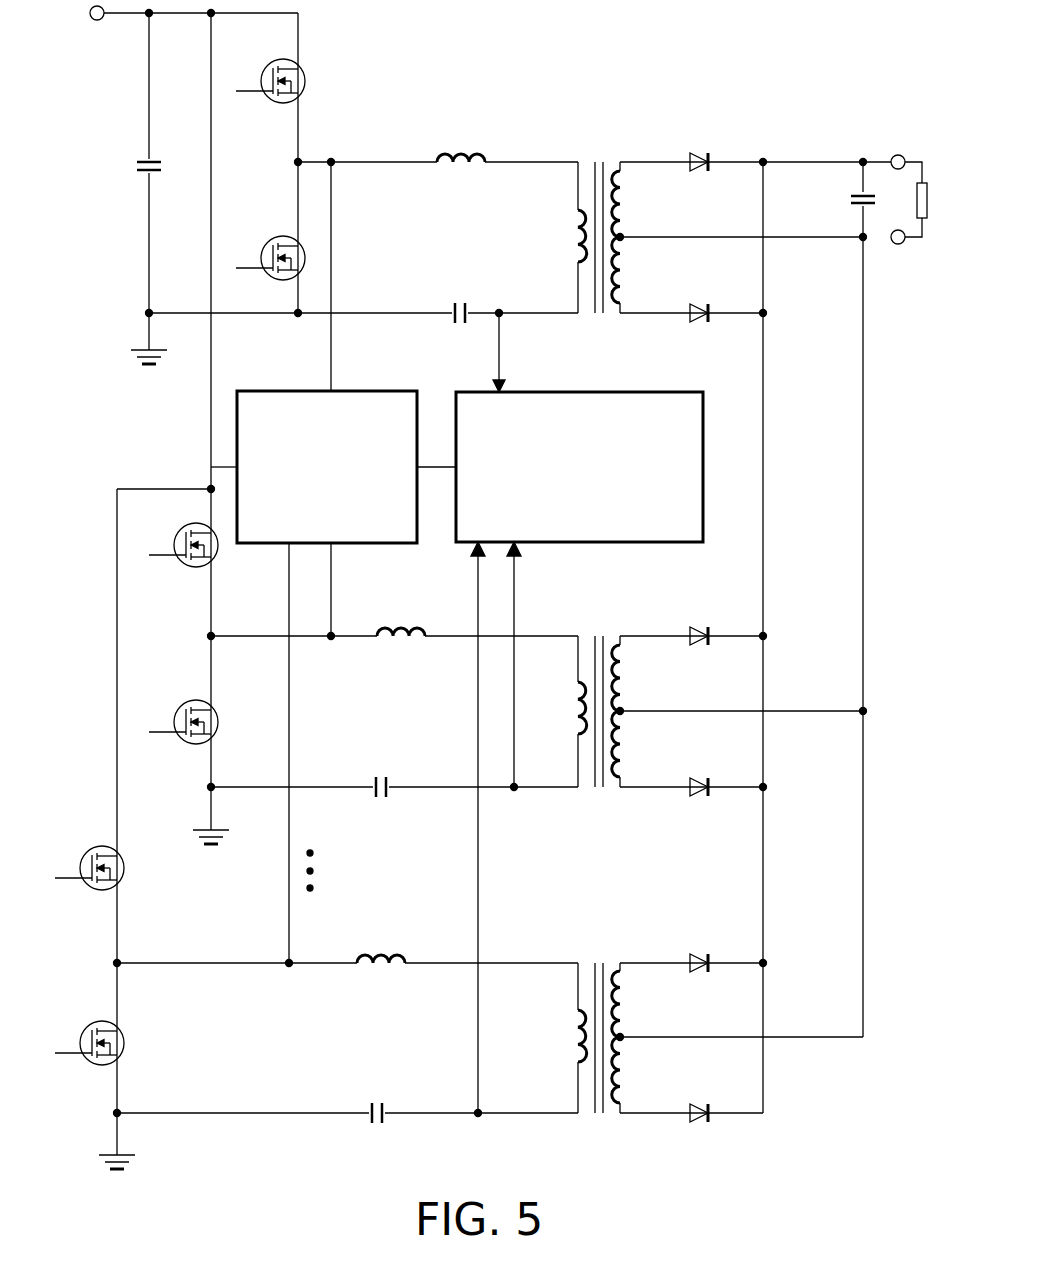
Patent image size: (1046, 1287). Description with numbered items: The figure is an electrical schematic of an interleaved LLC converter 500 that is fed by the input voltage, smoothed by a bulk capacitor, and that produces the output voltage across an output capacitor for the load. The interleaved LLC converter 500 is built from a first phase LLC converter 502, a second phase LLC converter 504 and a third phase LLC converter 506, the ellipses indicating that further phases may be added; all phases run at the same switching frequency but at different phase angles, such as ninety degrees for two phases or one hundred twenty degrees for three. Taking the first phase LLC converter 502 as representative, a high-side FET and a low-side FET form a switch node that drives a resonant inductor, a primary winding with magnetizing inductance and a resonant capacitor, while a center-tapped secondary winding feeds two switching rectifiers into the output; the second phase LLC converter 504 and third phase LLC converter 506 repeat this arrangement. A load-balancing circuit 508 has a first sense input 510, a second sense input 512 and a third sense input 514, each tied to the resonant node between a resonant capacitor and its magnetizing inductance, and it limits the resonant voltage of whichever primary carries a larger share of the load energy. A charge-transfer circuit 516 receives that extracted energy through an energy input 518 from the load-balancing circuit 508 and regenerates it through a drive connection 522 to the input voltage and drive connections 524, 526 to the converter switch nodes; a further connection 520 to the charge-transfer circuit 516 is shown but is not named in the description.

The interleaved LLC converter 500 is at (510, 90).
The first phase LLC converter 502 is at (780, 118).
The second phase LLC converter 504 is at (780, 612).
The third phase LLC converter 506 is at (780, 945).
The load-balancing circuit 508 is at (594, 524).
The first sense input 510 is at (505, 388).
The second sense input 512 is at (518, 546).
The third sense input 514 is at (476, 546).
The charge-transfer circuit 516 is at (336, 524).
The energy input 518 is at (423, 460).
The connection from input rail to charge transfer circuit 520 is at (237, 462).
The drive connection 522 is at (308, 387).
The drive connection 524 is at (333, 546).
The drive connection 526 is at (288, 546).